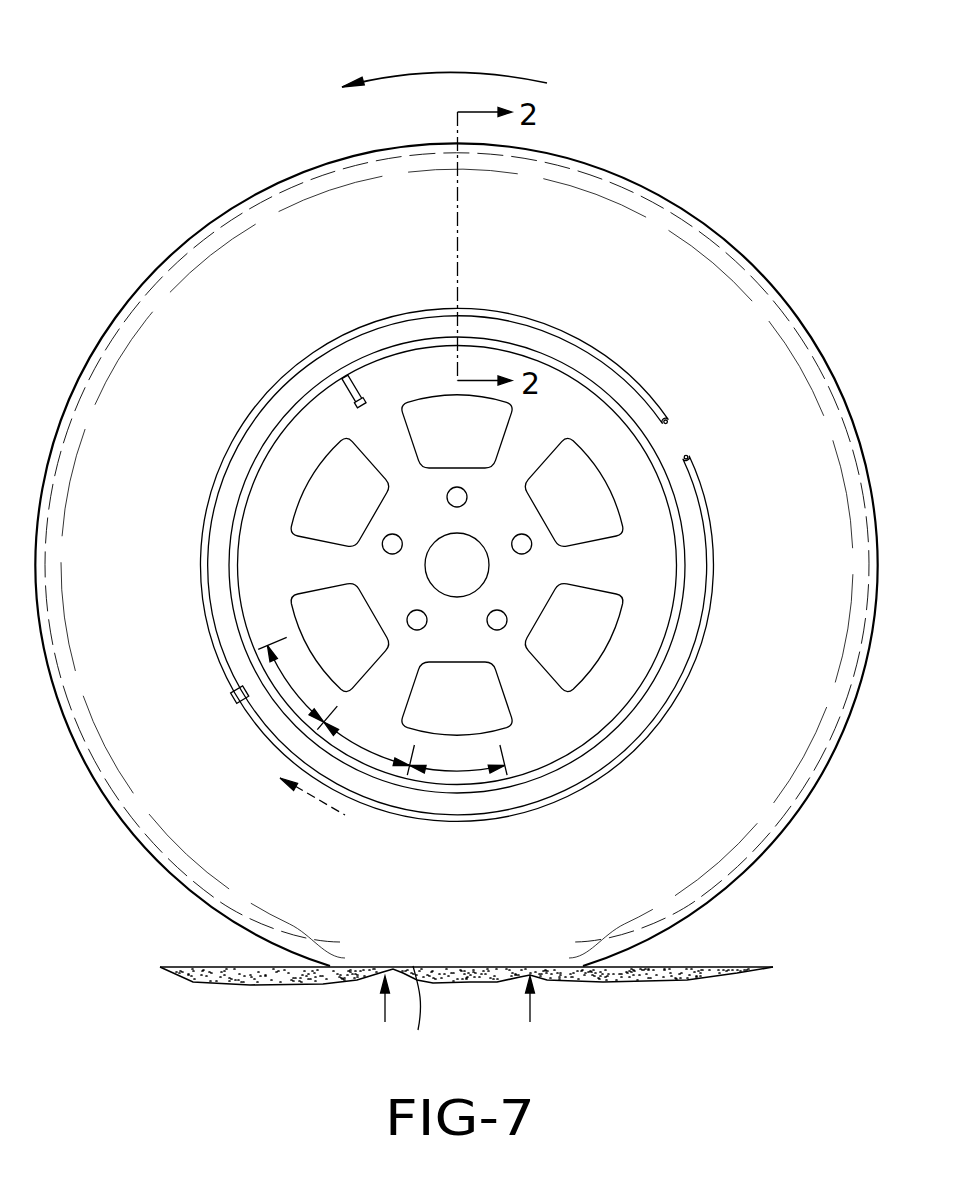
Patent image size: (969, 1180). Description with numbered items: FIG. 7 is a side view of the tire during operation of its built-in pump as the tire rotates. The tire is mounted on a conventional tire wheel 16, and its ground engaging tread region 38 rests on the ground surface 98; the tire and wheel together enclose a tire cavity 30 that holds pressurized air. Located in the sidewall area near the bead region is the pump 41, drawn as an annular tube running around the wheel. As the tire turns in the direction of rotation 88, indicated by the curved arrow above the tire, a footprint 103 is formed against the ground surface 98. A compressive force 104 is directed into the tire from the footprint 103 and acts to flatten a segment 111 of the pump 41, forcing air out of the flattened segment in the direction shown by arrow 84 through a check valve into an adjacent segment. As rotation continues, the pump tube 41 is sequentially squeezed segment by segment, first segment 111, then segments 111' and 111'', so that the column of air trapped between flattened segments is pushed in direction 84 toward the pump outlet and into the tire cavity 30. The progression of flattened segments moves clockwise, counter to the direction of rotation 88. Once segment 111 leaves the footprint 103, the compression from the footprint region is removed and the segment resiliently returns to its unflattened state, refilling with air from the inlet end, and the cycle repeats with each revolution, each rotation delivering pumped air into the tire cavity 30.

The direction of rotation 88 is at (535, 77).
The tire cavity 30 is at (580, 228).
The tread region 38 is at (702, 220).
The pump 41 is at (528, 320).
The tire wheel 16 is at (549, 442).
The segment 111 is at (457, 759).
The segment 111' is at (363, 736).
The segment 111'' is at (304, 679).
The direction of air flow 84 is at (318, 806).
The ground surface 98 is at (743, 965).
The compressive force 104 is at (383, 1005).
The footprint 103 is at (421, 1012).